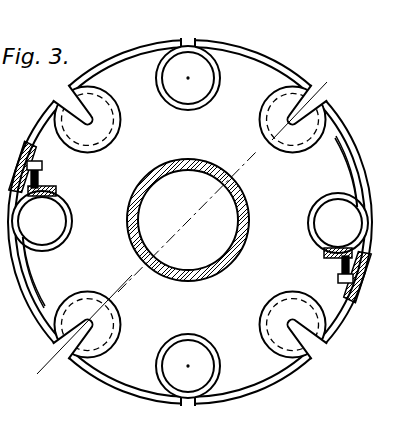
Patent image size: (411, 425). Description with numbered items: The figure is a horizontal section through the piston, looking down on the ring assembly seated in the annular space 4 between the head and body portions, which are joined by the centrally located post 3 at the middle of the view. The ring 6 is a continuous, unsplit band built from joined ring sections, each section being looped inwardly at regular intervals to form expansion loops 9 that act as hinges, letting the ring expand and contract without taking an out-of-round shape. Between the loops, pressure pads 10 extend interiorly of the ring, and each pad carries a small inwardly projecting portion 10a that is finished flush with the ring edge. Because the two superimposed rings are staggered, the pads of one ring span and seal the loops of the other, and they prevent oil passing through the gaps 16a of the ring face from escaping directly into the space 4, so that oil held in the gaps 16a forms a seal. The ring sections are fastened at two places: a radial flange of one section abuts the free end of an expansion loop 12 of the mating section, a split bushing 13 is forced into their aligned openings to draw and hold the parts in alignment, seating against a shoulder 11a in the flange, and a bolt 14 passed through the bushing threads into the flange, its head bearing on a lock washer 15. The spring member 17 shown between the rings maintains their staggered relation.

The centrally located post 3 is at (224, 178).
The annular space 4 is at (345, 102).
The ring 6 is at (121, 50).
The expansion loop 9 is at (213, 102).
The pressure pad 10 is at (286, 150).
The inwardly projecting portion 10a is at (316, 147).
The shoulder 11a is at (33, 165).
The expansion loop 12 is at (63, 191).
The split bushing 13 is at (45, 187).
The bolt 14 is at (38, 197).
The lock washer 15 is at (30, 194).
The gap 16a is at (191, 39).
The spring member 17 is at (78, 242).